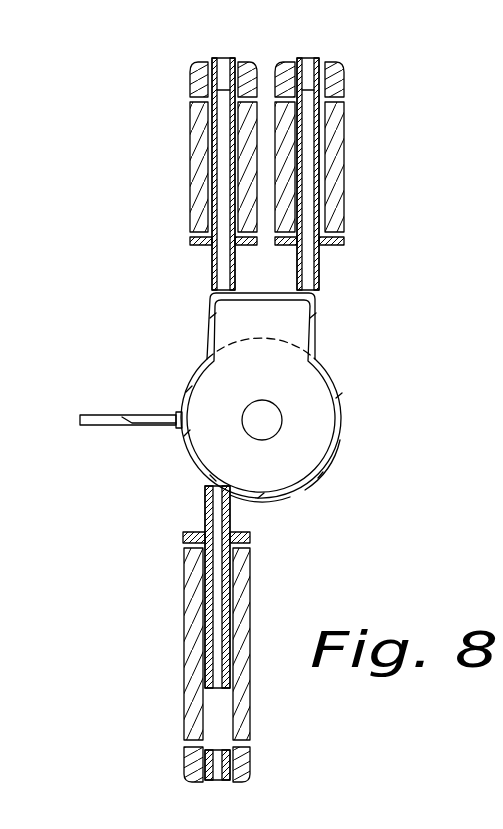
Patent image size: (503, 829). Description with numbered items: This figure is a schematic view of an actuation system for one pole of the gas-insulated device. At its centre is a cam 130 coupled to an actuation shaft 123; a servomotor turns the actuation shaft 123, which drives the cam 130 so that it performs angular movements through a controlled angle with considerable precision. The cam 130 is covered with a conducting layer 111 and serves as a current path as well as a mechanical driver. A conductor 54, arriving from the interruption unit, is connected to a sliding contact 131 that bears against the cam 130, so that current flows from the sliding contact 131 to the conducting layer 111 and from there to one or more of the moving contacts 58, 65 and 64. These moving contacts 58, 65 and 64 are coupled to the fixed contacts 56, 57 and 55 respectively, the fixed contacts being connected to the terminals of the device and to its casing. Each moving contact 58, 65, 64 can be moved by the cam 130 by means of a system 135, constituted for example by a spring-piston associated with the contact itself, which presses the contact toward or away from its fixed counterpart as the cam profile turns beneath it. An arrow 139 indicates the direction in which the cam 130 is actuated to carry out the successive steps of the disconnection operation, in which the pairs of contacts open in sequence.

The conductor 54 is at (118, 432).
The fixed contact 55 is at (247, 765).
The fixed contact 56 is at (188, 77).
The fixed contact 57 is at (345, 88).
The moving contact 58 is at (208, 165).
The moving contact 64 is at (217, 692).
The moving contact 65 is at (326, 178).
The conducting layer 111 is at (292, 500).
The actuation shaft 123 is at (284, 400).
The cam 130 is at (340, 430).
The sliding contact 131 is at (175, 433).
The system 135 is at (203, 252).
The arrow 139 is at (355, 458).